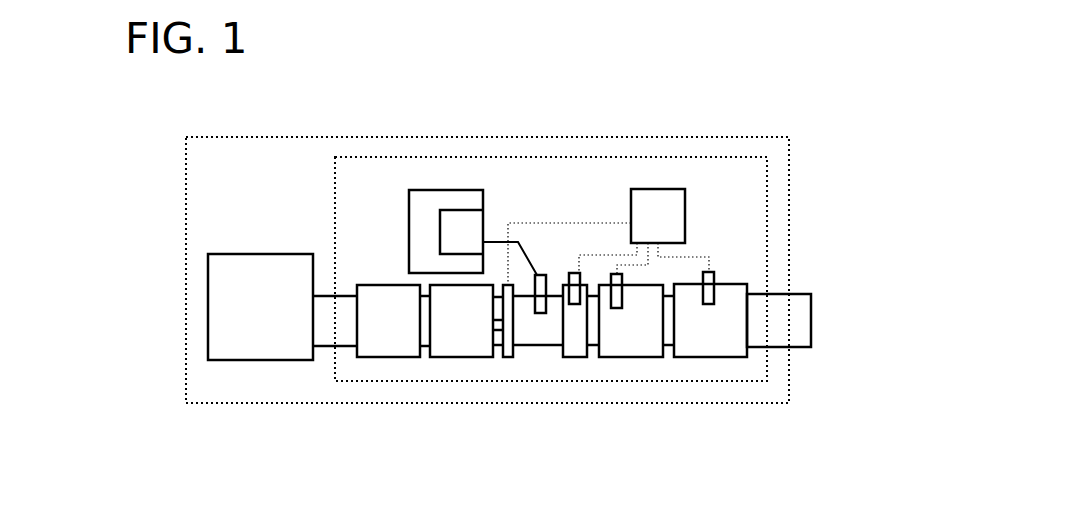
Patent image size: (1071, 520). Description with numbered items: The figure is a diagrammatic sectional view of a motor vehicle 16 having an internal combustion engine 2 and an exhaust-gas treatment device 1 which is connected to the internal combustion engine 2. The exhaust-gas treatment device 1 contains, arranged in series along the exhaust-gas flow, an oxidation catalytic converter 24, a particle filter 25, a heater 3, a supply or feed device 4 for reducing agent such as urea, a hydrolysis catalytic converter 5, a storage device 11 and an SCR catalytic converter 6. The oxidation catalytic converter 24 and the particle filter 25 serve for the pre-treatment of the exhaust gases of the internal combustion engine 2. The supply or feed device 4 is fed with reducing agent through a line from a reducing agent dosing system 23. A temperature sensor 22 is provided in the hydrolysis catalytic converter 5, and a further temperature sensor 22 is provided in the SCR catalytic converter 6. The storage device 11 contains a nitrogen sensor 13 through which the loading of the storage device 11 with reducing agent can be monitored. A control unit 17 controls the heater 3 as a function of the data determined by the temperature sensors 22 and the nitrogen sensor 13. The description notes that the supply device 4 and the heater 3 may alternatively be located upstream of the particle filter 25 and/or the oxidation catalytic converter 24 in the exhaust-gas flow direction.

The exhaust-gas treatment device 1 is at (748, 157).
The internal combustion engine 2 is at (208, 360).
The heater 3 is at (507, 357).
The supply or feed device 4 is at (541, 275).
The hydrolysis catalytic converter 5 is at (577, 357).
The SCR catalytic converter 6 is at (692, 357).
The storage device 11 is at (635, 357).
The nitrogen sensor 13 is at (616, 274).
The motor vehicle 16 is at (788, 137).
The control unit 17 is at (685, 212).
The temperature sensor 22 is at (576, 273).
The reducing agent dosing system 23 is at (415, 190).
The oxidation catalytic converter 24 is at (387, 357).
The particle filter 25 is at (450, 357).